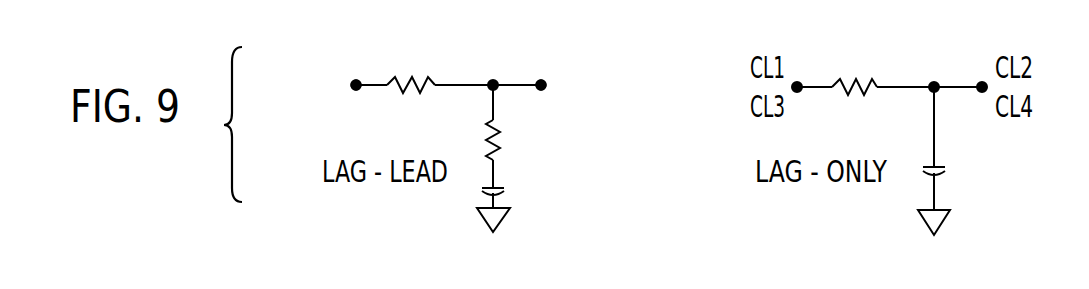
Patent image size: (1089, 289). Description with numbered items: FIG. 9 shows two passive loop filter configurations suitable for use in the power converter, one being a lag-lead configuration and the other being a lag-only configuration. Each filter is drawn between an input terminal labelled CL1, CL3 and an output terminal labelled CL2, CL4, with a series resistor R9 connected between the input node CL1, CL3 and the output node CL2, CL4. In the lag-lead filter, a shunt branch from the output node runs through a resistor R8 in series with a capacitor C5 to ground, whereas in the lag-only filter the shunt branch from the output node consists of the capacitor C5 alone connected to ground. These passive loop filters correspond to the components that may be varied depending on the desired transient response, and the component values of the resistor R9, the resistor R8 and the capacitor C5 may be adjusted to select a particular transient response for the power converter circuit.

The clock line 1 input terminal CL1 is at (335, 69).
The clock line 2 output terminal CL2 is at (564, 69).
The clock line 3 input terminal CL3 is at (335, 101).
The clock line 4 output terminal CL4 is at (564, 101).
The resistor R9 is at (632, 67).
The resistor R8 is at (511, 139).
The capacitor C5 is at (730, 179).